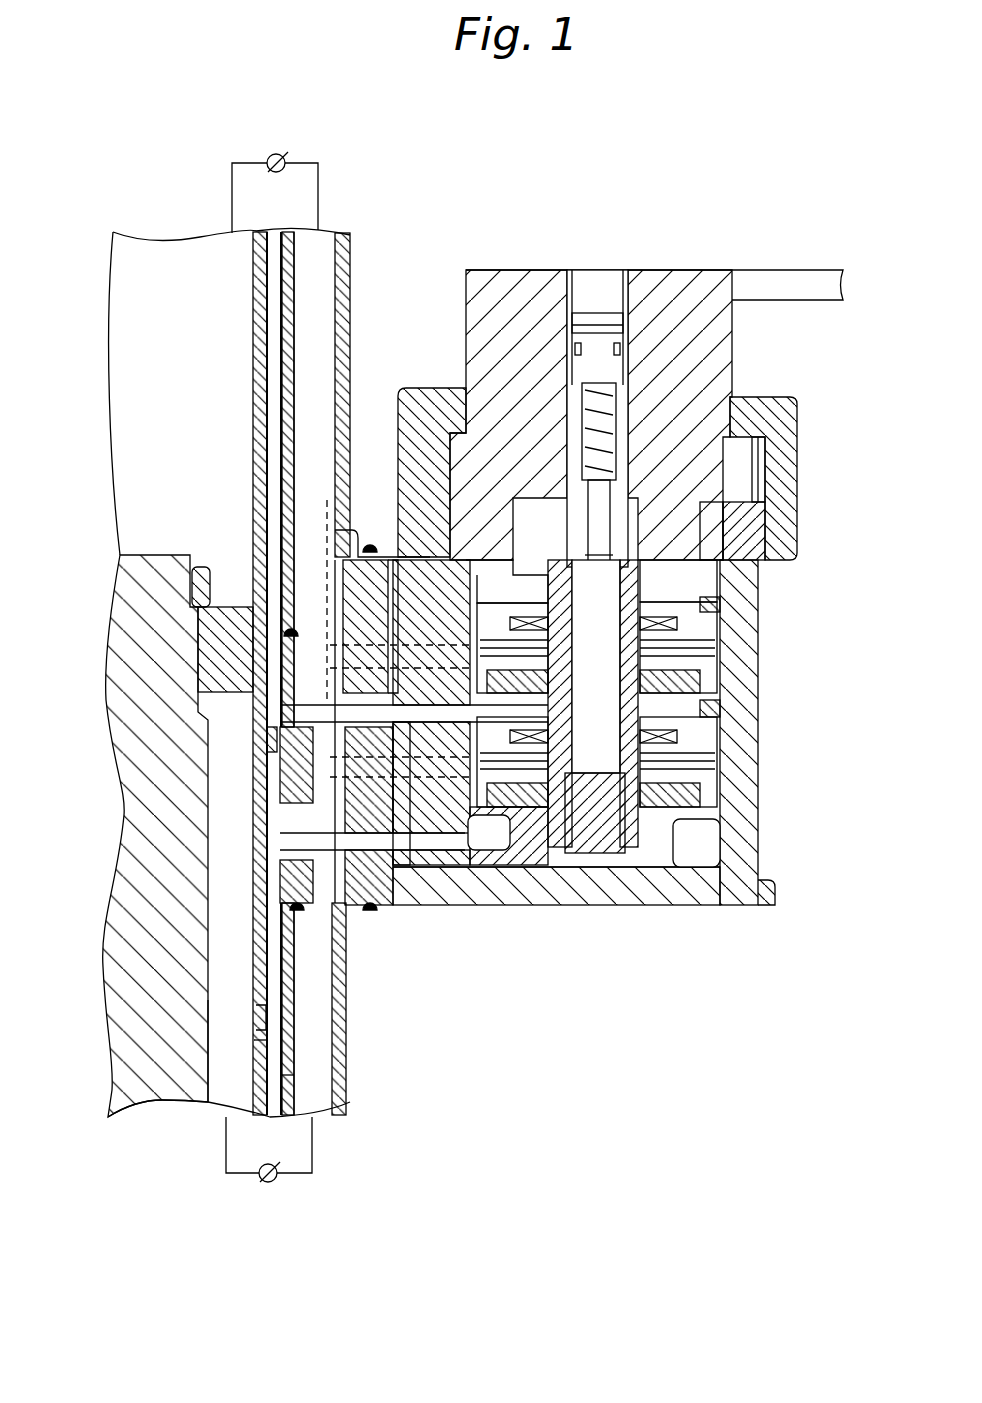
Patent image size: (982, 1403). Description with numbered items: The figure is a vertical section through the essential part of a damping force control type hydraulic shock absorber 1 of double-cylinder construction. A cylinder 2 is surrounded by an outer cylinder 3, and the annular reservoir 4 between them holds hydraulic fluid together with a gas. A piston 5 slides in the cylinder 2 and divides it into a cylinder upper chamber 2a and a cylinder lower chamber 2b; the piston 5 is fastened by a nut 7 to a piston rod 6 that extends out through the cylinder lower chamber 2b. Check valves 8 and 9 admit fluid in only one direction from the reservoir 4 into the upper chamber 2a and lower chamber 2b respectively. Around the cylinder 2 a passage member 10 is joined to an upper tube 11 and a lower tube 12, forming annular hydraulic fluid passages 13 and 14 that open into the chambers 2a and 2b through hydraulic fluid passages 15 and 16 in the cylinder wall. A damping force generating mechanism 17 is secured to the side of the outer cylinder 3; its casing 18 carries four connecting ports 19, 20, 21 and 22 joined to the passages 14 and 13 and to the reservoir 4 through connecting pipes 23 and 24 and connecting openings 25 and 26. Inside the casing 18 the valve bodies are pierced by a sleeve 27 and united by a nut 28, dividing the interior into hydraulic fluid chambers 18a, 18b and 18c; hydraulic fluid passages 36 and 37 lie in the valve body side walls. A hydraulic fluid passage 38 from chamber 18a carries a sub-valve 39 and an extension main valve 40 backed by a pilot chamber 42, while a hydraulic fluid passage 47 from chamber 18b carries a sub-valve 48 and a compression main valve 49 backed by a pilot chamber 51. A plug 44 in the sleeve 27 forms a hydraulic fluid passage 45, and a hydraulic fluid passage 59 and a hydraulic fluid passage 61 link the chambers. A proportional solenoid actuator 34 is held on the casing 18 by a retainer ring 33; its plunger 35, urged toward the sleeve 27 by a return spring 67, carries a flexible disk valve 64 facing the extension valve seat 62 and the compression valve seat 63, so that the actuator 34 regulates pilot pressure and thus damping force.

The damping force control type hydraulic shock absorber 1 is at (635, 170).
The cylinder 2 is at (270, 292).
The cylinder upper chamber 2a is at (153, 270).
The cylinder lower chamber 2b is at (208, 1107).
The outer cylinder 3 is at (340, 247).
The annular reservoir 4 is at (316, 298).
The piston 5 is at (220, 640).
The piston rod 6 is at (124, 1077).
The nut 7 is at (190, 555).
The check valve 8 is at (285, 153).
The check valve 9 is at (278, 1180).
The passage member 10 is at (280, 764).
The upper tube 11 is at (292, 343).
The lower tube 12 is at (293, 1083).
The annular hydraulic fluid passage 13 is at (280, 386).
The annular hydraulic fluid passage 14 is at (273, 1012).
The hydraulic fluid passage 15 is at (265, 263).
The hydraulic fluid passage 16 is at (260, 1050).
The damping force generating mechanism 17 is at (714, 256).
The casing 18 is at (665, 895).
The hydraulic fluid chamber 18a is at (745, 880).
The hydraulic fluid chamber 18b is at (717, 708).
The hydraulic fluid chamber 18c is at (722, 605).
The connecting port 19 is at (465, 845).
The connecting port 20 is at (350, 560).
The connecting port 21 is at (430, 870).
The connecting port 22 is at (430, 560).
The connecting pipe 23 is at (363, 900).
The connecting pipe 24 is at (345, 445).
The connecting opening 25 is at (357, 907).
The connecting opening 26 is at (330, 530).
The sleeve 27 is at (590, 770).
The nut 28 is at (527, 790).
The retainer ring 33 is at (765, 420).
The proportional solenoid actuator 34 is at (532, 297).
The plunger 35 is at (660, 430).
The hydraulic fluid passage 36 is at (500, 868).
The hydraulic fluid passage 37 is at (448, 388).
The hydraulic fluid passage 38 is at (700, 885).
The sub-valve 39 is at (705, 855).
The main valve 40 is at (712, 774).
The pilot chamber 42 is at (710, 750).
The plug 44 is at (635, 883).
The hydraulic fluid passage 45 is at (608, 773).
The hydraulic fluid passage 47 is at (723, 683).
The sub-valve 48 is at (712, 672).
The main valve 49 is at (717, 647).
The pilot chamber 51 is at (745, 575).
The hydraulic fluid passage 59 is at (727, 560).
The hydraulic fluid passage 61 is at (498, 560).
The valve seat 62 is at (770, 557).
The valve seat 63 is at (740, 490).
The disk valve 64 is at (745, 520).
The return spring 67 is at (645, 437).